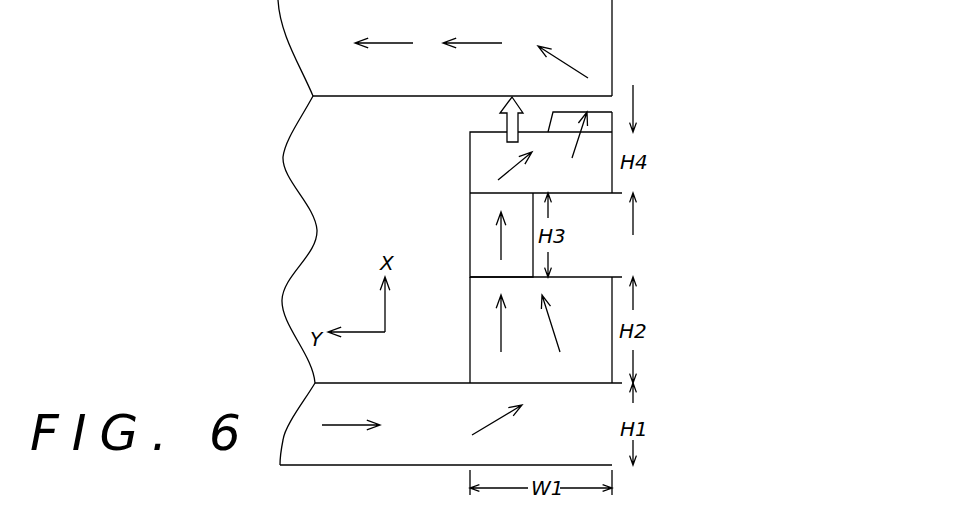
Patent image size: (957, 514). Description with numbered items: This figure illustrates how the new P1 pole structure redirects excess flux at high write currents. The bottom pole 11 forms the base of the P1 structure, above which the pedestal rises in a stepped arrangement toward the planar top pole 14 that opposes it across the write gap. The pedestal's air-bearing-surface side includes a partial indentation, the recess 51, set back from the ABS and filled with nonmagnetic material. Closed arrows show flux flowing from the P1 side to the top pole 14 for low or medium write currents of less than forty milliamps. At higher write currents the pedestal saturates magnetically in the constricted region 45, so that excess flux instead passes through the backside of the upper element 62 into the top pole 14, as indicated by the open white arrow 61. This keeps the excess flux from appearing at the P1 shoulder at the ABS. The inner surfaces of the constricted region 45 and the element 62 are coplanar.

The top pole 14 is at (315, 42).
The bottom pole 11 is at (328, 447).
The recess 51 is at (604, 240).
The constricted region 45 is at (470, 242).
The P1C element 62 is at (502, 167).
The open white arrow 61 is at (507, 120).